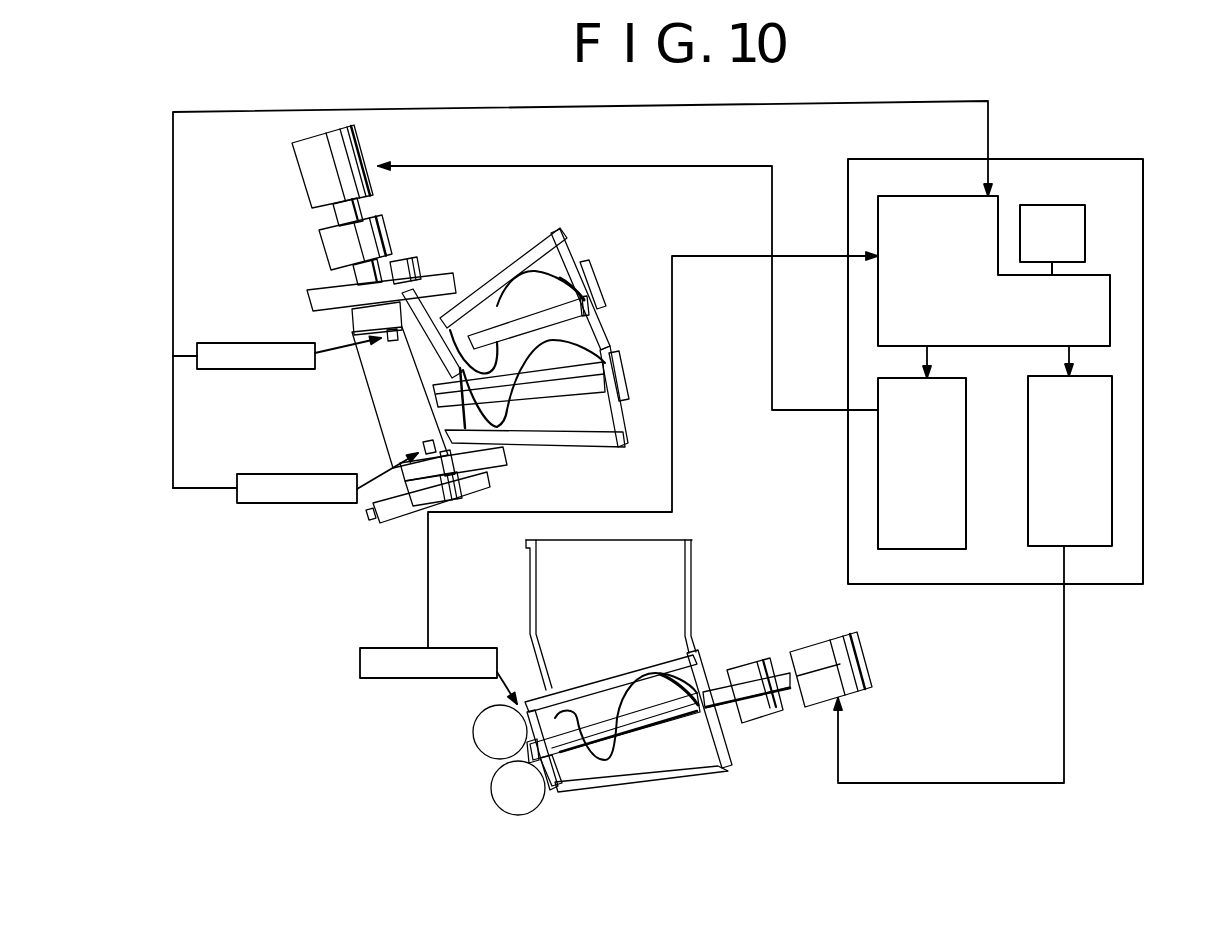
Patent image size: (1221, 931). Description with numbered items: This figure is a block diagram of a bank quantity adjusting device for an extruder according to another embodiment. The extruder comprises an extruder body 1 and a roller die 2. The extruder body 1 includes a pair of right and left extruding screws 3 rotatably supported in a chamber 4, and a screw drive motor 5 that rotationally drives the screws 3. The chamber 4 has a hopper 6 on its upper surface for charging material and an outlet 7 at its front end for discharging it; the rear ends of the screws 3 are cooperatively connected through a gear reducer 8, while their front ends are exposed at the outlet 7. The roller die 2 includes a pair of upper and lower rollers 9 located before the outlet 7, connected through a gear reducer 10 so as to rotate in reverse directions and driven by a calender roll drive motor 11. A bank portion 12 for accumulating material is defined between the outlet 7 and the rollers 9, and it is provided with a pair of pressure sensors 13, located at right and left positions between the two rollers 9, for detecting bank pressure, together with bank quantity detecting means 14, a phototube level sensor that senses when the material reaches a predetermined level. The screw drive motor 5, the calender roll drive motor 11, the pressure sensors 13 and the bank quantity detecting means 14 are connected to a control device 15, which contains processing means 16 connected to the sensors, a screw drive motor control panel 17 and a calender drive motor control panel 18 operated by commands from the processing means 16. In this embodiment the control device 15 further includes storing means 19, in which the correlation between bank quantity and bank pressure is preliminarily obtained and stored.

The extruder body 1 is at (567, 225).
The roller die 2 is at (358, 510).
The extruding screws 3 is at (515, 283).
The chamber 4 is at (537, 247).
The screw drive motor 5 is at (867, 668).
The hopper 6 is at (691, 593).
The outlet 7 is at (423, 384).
The gear reducer 8 is at (778, 712).
The rollers 9 is at (378, 430).
The gear reducer 10 is at (321, 252).
The calender roll drive motor 11 is at (295, 168).
The bank portion 12 is at (525, 762).
The pressure sensors 13 is at (237, 370).
The bank quantity detecting means 14 is at (360, 653).
The control device 15 is at (1147, 185).
The processing means 16 is at (1117, 316).
The screw drive motor control panel 17 is at (1117, 516).
The calender drive motor control panel 18 is at (879, 516).
The storing means 19 is at (1073, 207).